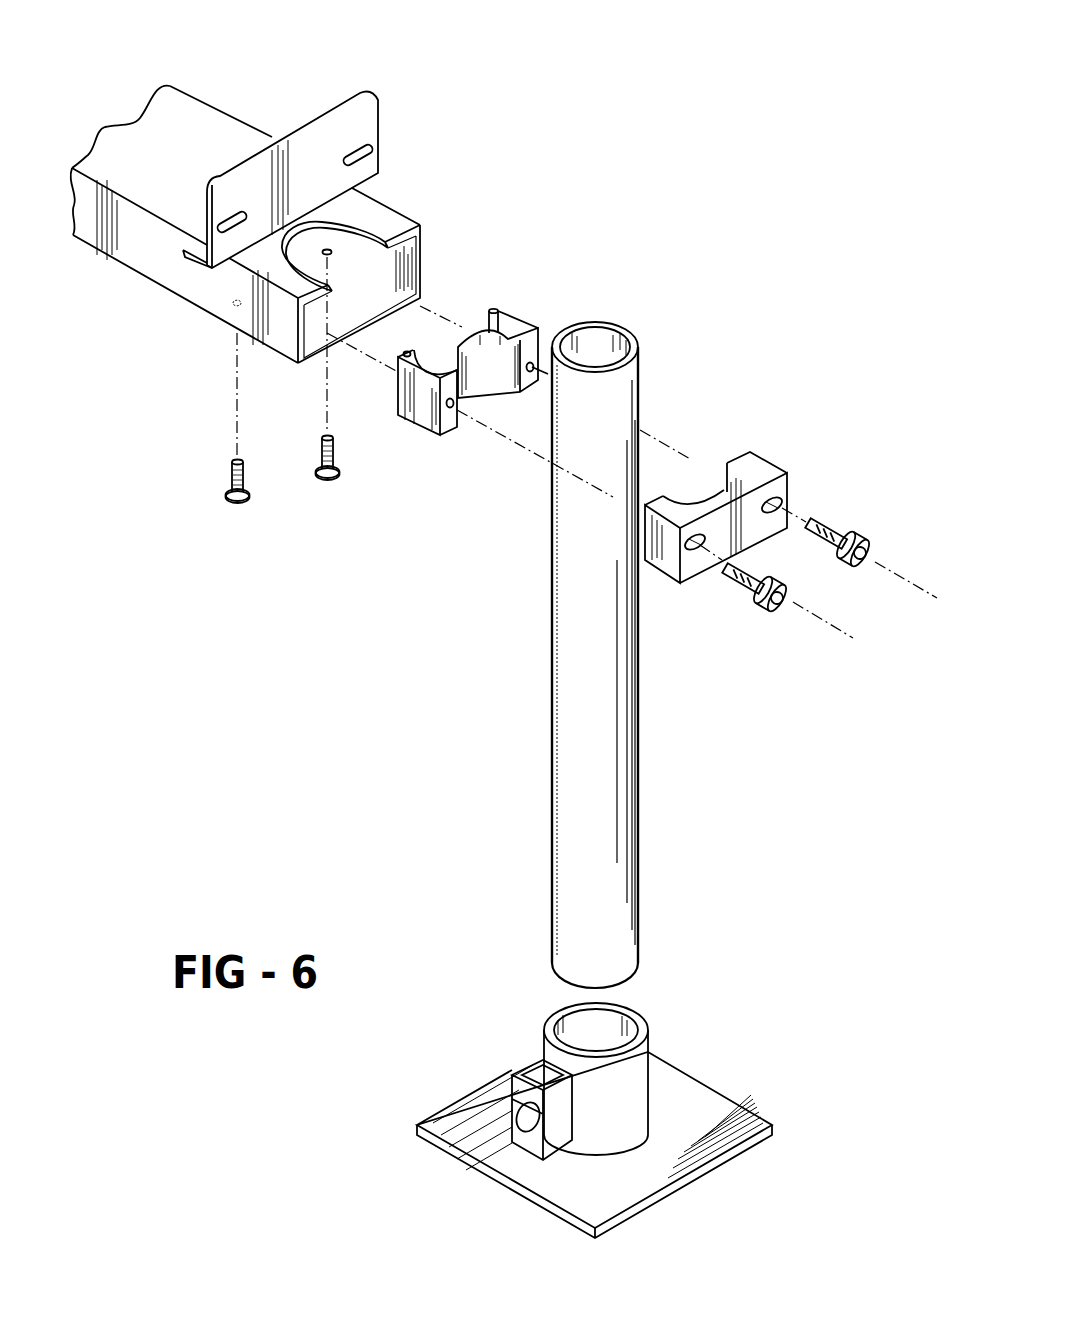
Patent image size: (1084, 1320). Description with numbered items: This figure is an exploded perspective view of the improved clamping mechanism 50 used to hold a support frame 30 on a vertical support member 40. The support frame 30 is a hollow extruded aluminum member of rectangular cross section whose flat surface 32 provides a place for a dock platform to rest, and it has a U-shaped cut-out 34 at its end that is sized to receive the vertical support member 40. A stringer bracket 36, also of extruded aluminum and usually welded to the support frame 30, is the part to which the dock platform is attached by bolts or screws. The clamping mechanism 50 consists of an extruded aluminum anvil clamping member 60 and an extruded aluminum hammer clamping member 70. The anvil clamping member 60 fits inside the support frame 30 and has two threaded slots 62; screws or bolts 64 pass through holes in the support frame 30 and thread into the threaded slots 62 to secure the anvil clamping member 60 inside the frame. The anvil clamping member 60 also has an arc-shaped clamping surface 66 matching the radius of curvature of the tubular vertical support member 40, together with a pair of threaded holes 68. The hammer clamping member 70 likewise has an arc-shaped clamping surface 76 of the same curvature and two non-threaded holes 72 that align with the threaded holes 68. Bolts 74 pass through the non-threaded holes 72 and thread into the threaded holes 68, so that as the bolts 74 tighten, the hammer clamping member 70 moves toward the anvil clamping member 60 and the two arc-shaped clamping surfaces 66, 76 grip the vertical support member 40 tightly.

The support frame 30 is at (160, 249).
The flat surface 32 is at (192, 122).
The U-shaped cut-out 34 is at (379, 290).
The stringer bracket 36 is at (310, 88).
The vertical support member 40 is at (631, 609).
The clamping mechanism 50 is at (604, 314).
The anvil clamping member 60 is at (496, 346).
The threaded slot 62 is at (416, 351).
The screws or bolts 64 is at (316, 459).
The arc-shaped clamping surface 66 is at (491, 364).
The threaded hole 68 is at (532, 366).
The hammer clamping member 70 is at (788, 516).
The non-threaded hole 72 is at (779, 499).
The bolt 74 is at (785, 575).
The arc-shaped clamping surface 76 is at (713, 494).